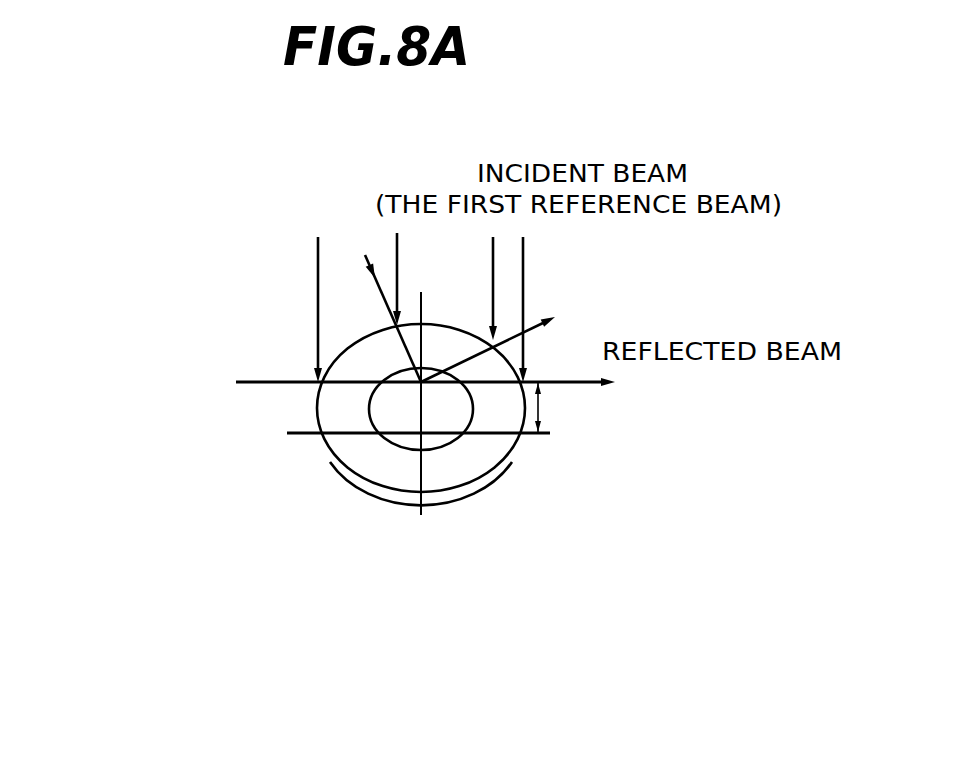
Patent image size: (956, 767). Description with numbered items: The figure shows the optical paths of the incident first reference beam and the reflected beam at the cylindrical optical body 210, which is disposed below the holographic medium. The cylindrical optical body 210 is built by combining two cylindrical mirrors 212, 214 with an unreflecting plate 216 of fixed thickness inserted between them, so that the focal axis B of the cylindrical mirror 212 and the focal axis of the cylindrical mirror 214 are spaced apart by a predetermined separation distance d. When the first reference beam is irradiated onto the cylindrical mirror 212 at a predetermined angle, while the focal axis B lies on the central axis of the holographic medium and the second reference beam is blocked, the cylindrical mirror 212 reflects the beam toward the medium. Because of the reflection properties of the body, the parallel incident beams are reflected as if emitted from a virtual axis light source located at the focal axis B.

The cylindrical optical body 210 is at (345, 414).
The cylindrical mirror 212 is at (338, 372).
The unreflecting plate 216 is at (323, 412).
The cylindrical mirror 214 is at (324, 452).
The separation distance d is at (550, 407).
The focal axis B is at (430, 391).